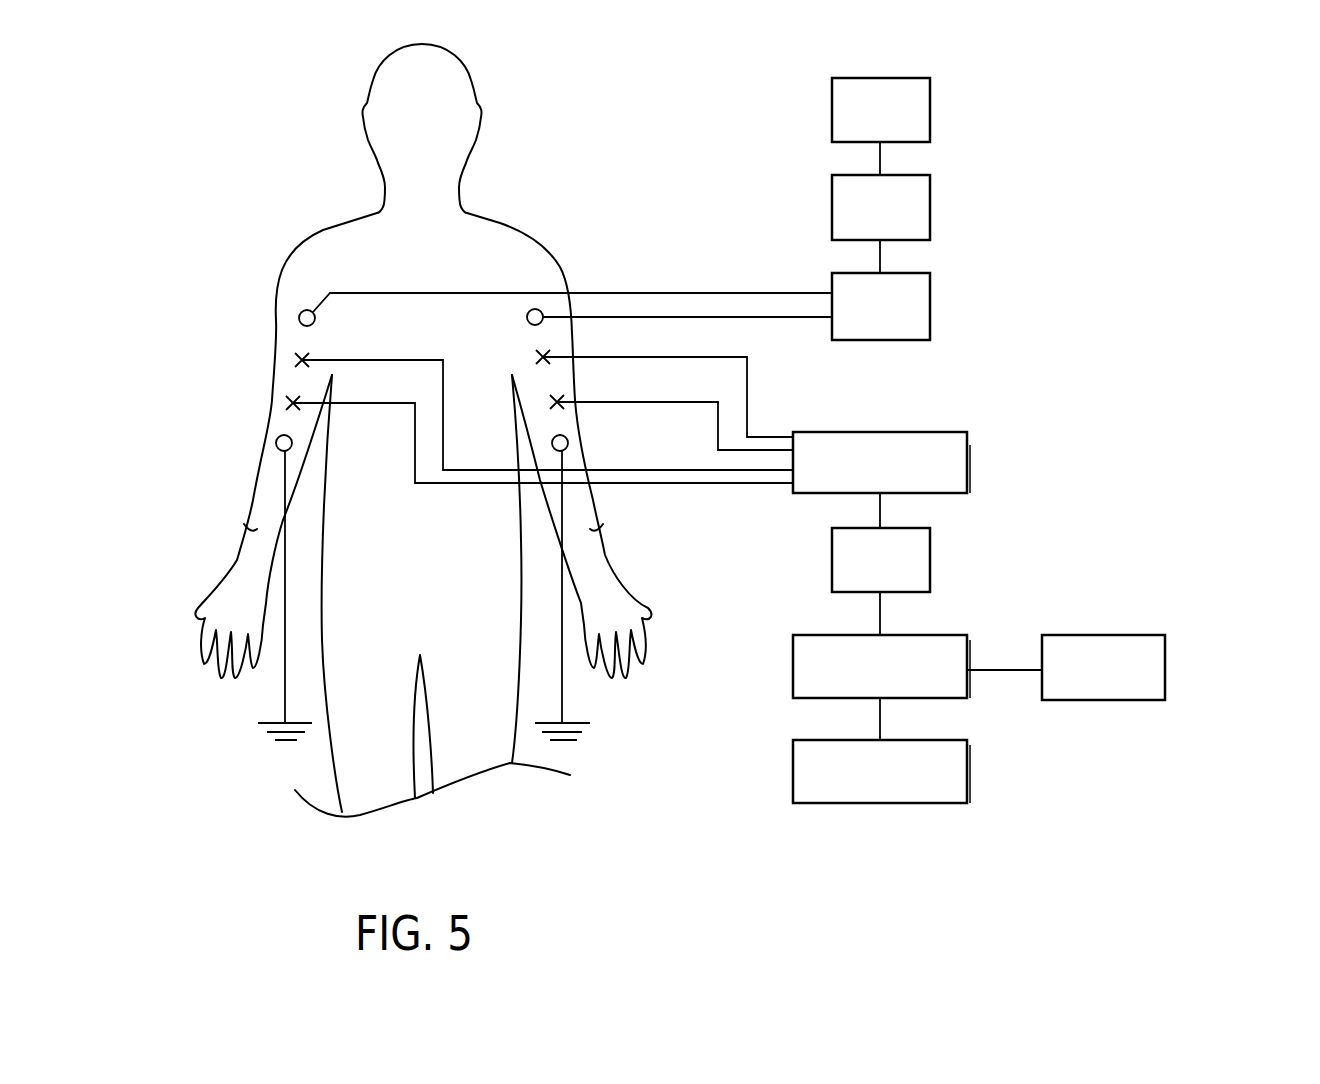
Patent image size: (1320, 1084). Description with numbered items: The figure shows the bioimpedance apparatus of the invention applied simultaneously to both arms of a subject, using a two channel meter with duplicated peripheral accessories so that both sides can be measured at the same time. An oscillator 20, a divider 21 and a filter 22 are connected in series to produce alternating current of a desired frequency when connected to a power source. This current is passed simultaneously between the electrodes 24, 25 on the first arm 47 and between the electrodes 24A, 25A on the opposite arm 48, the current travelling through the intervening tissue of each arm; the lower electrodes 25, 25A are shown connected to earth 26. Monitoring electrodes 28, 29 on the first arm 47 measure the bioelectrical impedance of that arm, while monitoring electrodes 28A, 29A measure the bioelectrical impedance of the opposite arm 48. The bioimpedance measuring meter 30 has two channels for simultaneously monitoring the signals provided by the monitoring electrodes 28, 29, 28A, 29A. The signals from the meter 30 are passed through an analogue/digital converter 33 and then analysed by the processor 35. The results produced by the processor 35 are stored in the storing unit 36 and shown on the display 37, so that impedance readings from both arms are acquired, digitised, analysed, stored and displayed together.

The oscillator 20 is at (930, 112).
The divider 21 is at (930, 208).
The filter 22 is at (930, 307).
The electrode 24 is at (299, 313).
The electrode 24A is at (543, 309).
The electrode 25 is at (276, 443).
The electrode 25A is at (568, 440).
The ground 26 is at (268, 740).
The monitoring electrode 28 is at (297, 357).
The monitoring electrode 28A is at (553, 352).
The monitoring electrode 29 is at (290, 402).
The monitoring electrode 29A is at (563, 398).
The bioimpedance measuring meter 30 is at (967, 458).
The analogue/digital converter 33 is at (930, 560).
The processor 35 is at (793, 665).
The storing unit 36 is at (1165, 668).
The display 37 is at (967, 773).
The arm 47 is at (253, 533).
The arm 48 is at (587, 530).